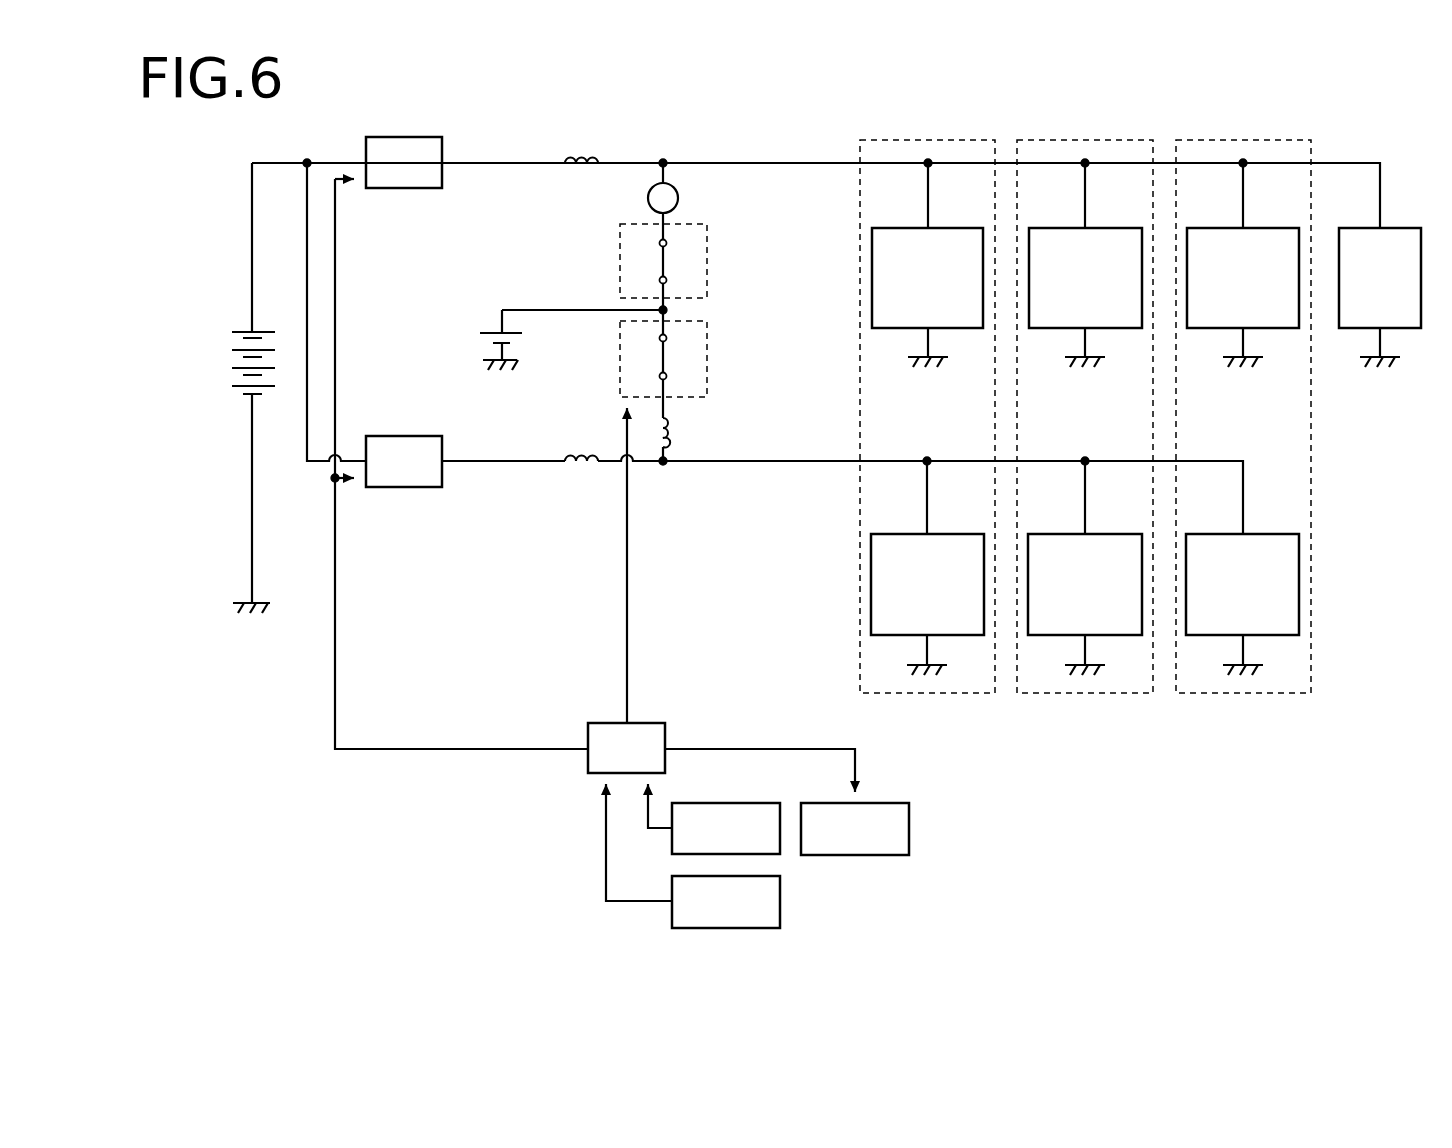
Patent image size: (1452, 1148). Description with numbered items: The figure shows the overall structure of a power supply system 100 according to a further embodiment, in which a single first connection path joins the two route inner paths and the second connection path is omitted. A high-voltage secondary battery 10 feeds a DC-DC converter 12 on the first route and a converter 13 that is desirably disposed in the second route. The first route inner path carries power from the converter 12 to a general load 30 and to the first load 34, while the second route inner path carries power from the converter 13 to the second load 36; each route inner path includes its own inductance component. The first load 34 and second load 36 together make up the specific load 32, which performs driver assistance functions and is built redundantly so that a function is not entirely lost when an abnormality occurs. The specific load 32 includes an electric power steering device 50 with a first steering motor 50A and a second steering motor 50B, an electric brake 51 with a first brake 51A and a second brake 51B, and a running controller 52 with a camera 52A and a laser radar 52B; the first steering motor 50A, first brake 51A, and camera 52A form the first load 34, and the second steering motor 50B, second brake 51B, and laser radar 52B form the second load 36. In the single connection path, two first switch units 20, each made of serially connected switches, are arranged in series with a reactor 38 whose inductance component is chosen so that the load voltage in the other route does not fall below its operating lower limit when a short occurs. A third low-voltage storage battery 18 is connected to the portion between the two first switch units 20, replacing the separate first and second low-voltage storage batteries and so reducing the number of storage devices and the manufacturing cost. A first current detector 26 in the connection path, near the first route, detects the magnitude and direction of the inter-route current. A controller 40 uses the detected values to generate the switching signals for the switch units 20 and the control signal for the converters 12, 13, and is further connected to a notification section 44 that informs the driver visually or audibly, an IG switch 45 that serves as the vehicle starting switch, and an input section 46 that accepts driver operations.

The high-voltage secondary battery 10 is at (236, 331).
The DC-DC converter 12 is at (378, 137).
The converter 13 is at (378, 436).
The third low-voltage storage battery 18 is at (482, 332).
The first switch unit 20 is at (612, 229).
The first current detector 26 is at (648, 204).
The general load 30 is at (1400, 228).
The specific load 32 is at (1378, 405).
The first load 34 is at (1320, 335).
The second load 36 is at (1321, 552).
The reactor 38 is at (707, 460).
The controller 40 is at (666, 732).
The notification section 44 is at (890, 803).
The IG switch 45 is at (760, 803).
The input section 46 is at (672, 926).
The electric power steering device 50 is at (971, 140).
The first steering motor 50A is at (948, 228).
The second steering motor 50B is at (948, 534).
The electric brake 51 is at (1129, 140).
The first brake 51A is at (1105, 228).
The second brake 51B is at (1105, 534).
The running controller 52 is at (1287, 140).
The camera 52A is at (1263, 228).
The laser radar 52B is at (1263, 534).
The power supply system 100 is at (1381, 135).